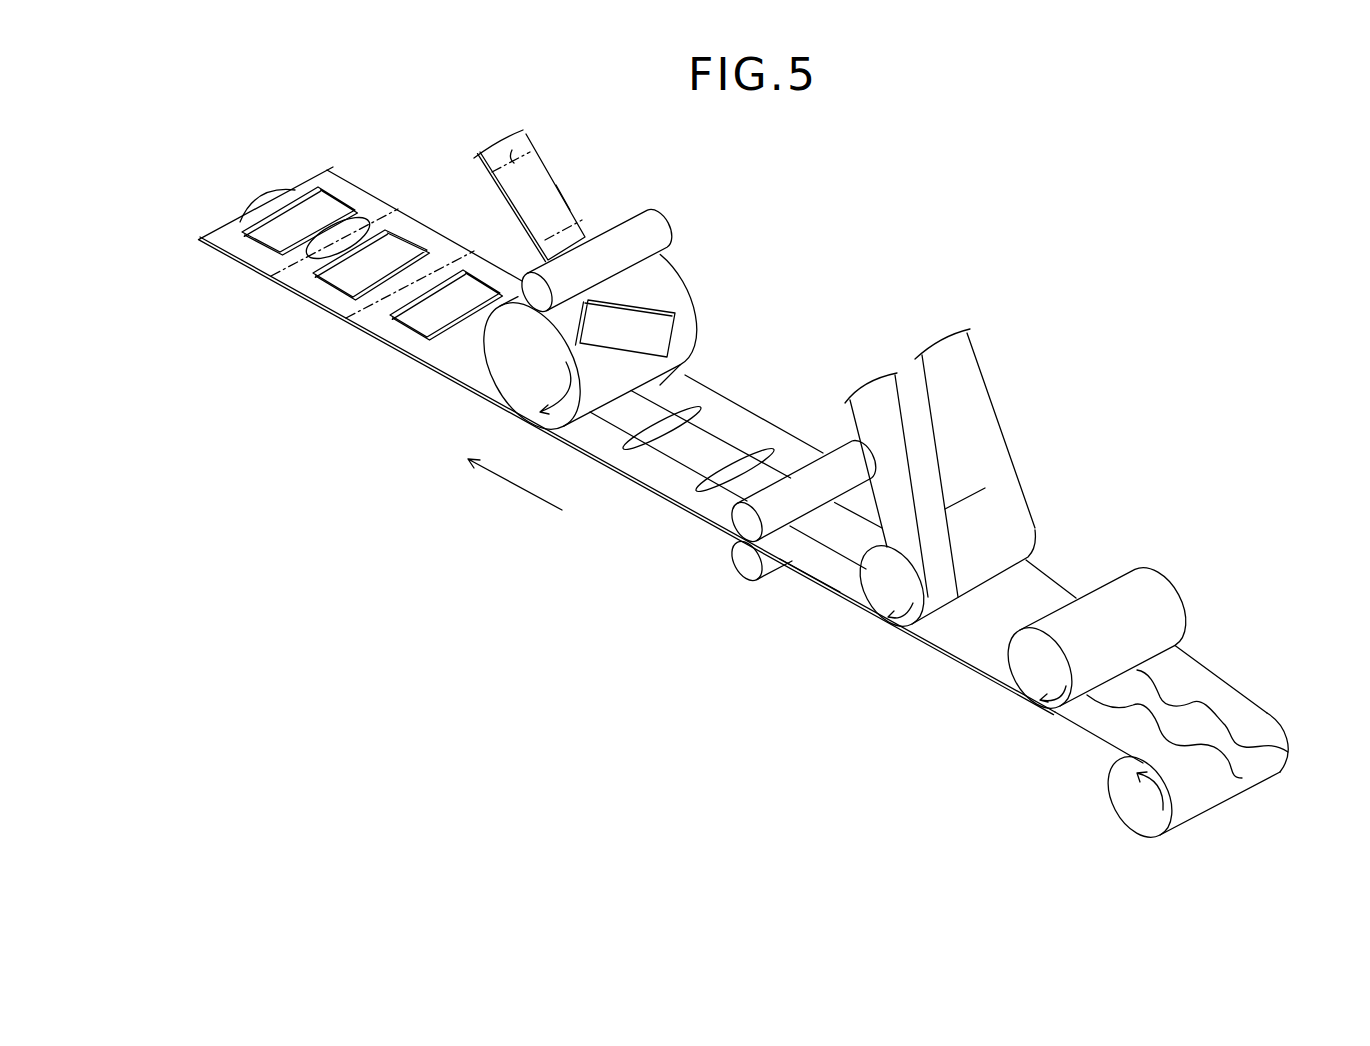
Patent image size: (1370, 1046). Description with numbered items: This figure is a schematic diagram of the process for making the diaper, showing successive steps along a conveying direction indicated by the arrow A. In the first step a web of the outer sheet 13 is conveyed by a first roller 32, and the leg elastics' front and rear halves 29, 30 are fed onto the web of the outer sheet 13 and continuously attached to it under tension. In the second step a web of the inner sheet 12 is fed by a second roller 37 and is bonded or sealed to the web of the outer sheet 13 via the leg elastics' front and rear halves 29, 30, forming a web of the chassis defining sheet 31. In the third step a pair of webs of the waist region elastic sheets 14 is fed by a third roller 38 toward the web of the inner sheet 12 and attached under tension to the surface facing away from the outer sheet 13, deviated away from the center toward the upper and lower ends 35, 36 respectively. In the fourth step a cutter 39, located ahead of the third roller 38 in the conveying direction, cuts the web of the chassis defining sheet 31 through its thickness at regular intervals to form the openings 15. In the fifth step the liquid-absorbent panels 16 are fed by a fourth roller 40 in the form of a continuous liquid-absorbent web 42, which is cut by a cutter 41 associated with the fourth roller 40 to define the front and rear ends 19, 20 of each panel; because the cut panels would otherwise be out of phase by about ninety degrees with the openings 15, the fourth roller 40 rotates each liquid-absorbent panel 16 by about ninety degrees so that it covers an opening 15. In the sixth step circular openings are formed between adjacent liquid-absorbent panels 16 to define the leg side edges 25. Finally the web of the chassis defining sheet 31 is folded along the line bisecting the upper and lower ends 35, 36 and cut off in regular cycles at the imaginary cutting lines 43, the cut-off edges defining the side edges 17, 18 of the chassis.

The inner sheet 12 is at (1043, 593).
The outer sheet 13 is at (1107, 727).
The waist region elastic sheets 14 is at (830, 567).
The openings 15 is at (698, 488).
The liquid-absorbent panel 16 is at (420, 317).
The side edge of the chassis 17 is at (560, 198).
The side edge of the chassis 18 is at (513, 208).
The front end of the liquid-absorbent panel 19 is at (577, 228).
The rear end of the liquid-absorbent panel 20 is at (517, 150).
The leg side edges 25 is at (356, 252).
The leg elastics' front half 29 is at (1267, 740).
The leg elastics' rear half 30 is at (1229, 780).
The chassis defining sheet 31 is at (837, 600).
The first roller 32 is at (1130, 810).
The upper end 35 is at (748, 411).
The lower end 36 is at (637, 481).
The second roller 37 is at (1157, 590).
The third roller 38 is at (882, 597).
The cutter 39 is at (742, 523).
The fourth roller 40 is at (667, 277).
The cutter 41 is at (657, 221).
The liquid-absorbent web 42 is at (550, 163).
The imaginary cutting lines 43 is at (272, 277).
The arrow indicating conveying direction A is at (508, 483).